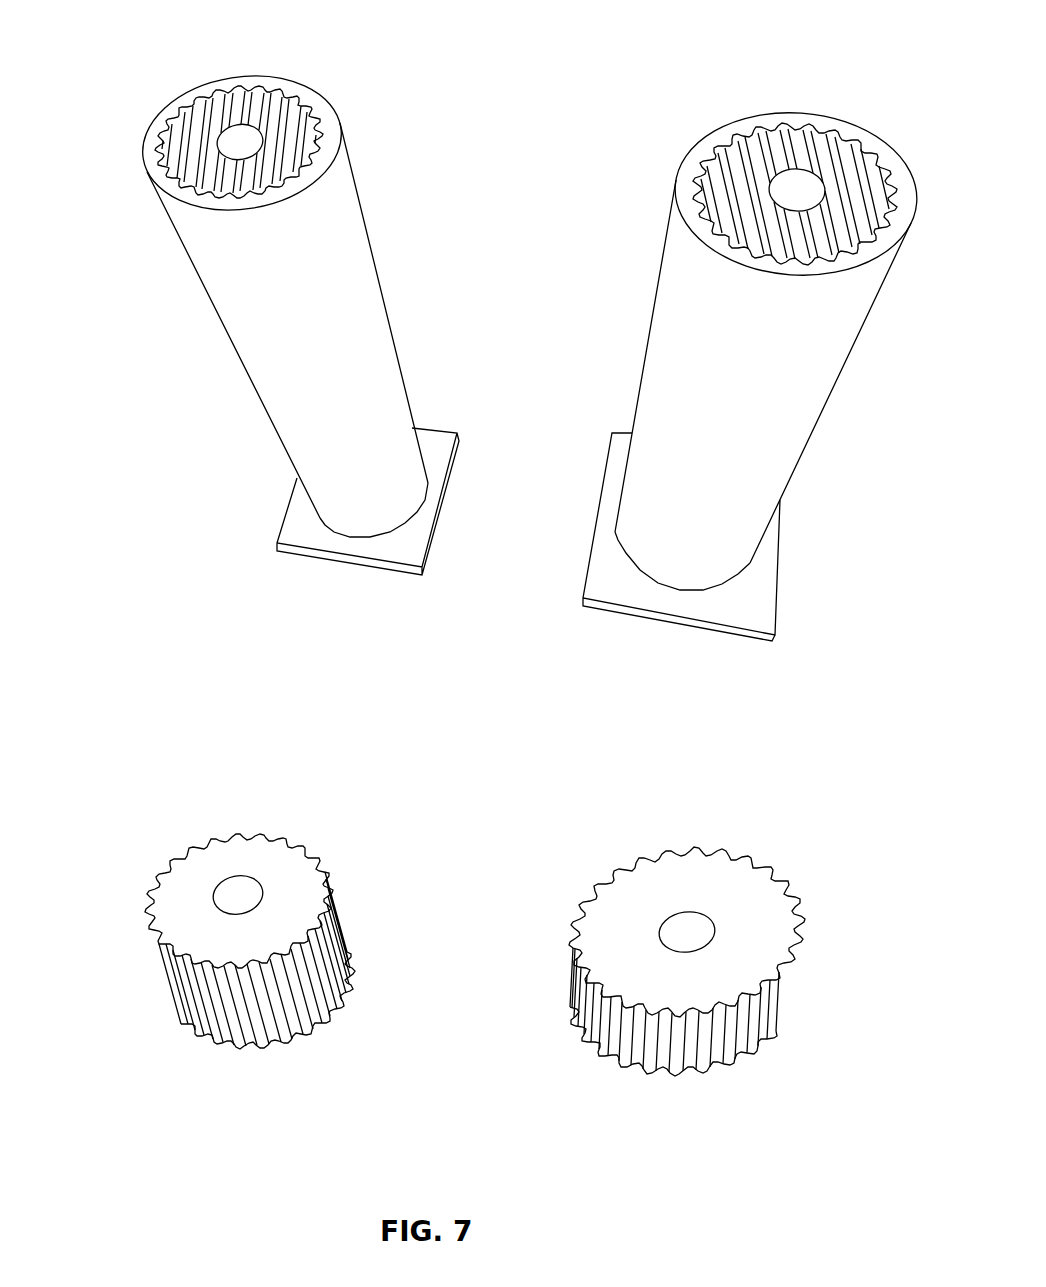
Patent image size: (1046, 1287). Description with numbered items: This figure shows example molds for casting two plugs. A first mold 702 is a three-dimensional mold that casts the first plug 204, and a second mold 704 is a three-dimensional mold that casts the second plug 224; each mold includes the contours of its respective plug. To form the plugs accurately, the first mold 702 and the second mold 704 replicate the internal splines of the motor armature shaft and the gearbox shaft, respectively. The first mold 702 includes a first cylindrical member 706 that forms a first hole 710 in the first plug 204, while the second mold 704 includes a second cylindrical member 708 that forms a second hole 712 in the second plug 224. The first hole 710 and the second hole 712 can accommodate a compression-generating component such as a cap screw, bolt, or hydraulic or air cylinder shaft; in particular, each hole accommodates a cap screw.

The first mold 702 is at (876, 86).
The second mold 704 is at (195, 35).
The first cylindrical member 706 is at (777, 177).
The second cylindrical member 708 is at (260, 143).
The first plug 204 is at (738, 865).
The second plug 224 is at (223, 840).
The first hole 710 is at (667, 920).
The second hole 712 is at (215, 893).